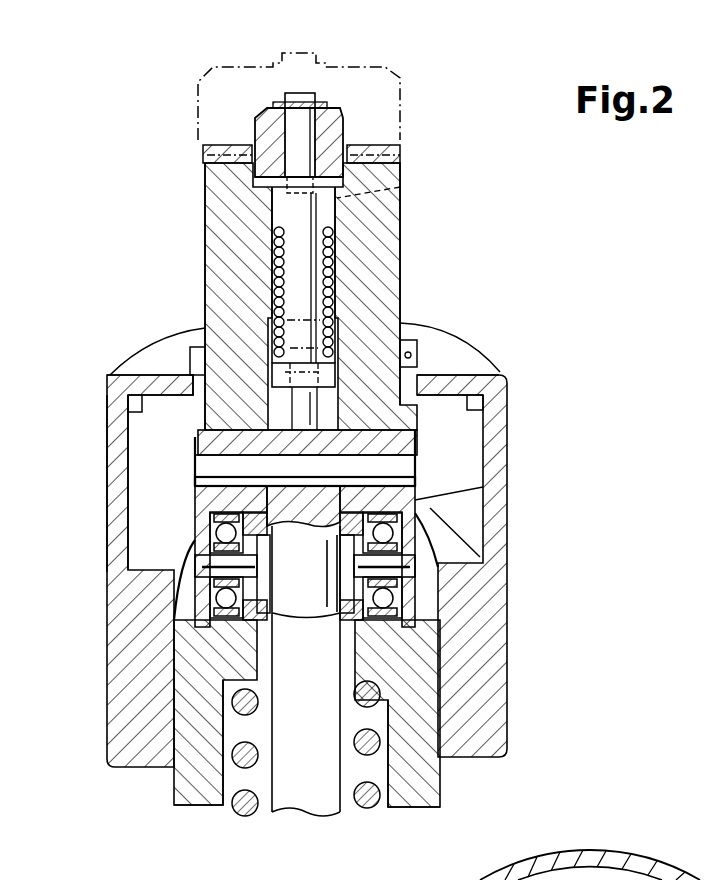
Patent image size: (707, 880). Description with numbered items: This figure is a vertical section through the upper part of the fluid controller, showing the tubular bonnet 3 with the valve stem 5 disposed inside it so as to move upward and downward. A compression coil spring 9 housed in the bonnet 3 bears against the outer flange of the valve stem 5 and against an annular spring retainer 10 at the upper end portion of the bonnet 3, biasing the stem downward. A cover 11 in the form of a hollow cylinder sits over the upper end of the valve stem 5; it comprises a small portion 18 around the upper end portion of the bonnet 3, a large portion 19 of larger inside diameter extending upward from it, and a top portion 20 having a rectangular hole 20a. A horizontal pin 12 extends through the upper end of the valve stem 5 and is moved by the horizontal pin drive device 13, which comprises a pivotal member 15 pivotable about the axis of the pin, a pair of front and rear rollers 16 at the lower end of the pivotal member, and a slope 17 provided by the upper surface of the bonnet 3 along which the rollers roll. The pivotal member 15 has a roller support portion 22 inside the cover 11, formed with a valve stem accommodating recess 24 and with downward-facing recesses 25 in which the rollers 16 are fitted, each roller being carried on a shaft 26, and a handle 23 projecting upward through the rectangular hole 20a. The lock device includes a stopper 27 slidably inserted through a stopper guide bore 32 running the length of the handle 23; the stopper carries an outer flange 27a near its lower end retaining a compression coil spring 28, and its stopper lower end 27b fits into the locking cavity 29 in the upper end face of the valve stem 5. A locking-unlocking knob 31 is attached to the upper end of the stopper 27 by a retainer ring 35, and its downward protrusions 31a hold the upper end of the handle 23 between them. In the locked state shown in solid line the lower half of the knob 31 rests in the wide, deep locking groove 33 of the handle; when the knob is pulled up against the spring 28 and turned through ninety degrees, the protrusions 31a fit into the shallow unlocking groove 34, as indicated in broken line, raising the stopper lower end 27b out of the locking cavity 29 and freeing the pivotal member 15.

The bonnet 3 is at (441, 780).
The valve stem 5 is at (292, 795).
The compression coil spring 9 is at (237, 770).
The spring retainer 10 is at (222, 695).
The cover 11 is at (508, 724).
The horizontal pin 12 is at (193, 487).
The horizontal pin drive device 13 is at (418, 478).
The pivotal member 15 is at (400, 302).
The rollers 16 is at (200, 623).
The slope 17 is at (432, 615).
The small portion 18 is at (125, 713).
The large portion 19 is at (120, 527).
The top portion 20 is at (110, 382).
The rectangular hole 20a is at (415, 362).
The roller support portion 22 is at (417, 503).
The handle 23 is at (400, 270).
The valve stem accommodating recess 24 is at (293, 437).
The recesses 25 is at (210, 522).
The shaft 26 is at (197, 570).
The stopper 27 is at (298, 262).
The outer flange 27a is at (270, 328).
The stopper lower end 27b is at (297, 408).
The compression coil spring 28 is at (273, 297).
The locking cavity 29 is at (196, 452).
The locking-unlocking knob 31 is at (198, 122).
The downward protrusions 31a is at (400, 152).
The stopper guide bore 32 is at (297, 222).
The locking groove 33 is at (343, 188).
The unlocking groove 34 is at (203, 152).
The retainer ring 35 is at (318, 98).